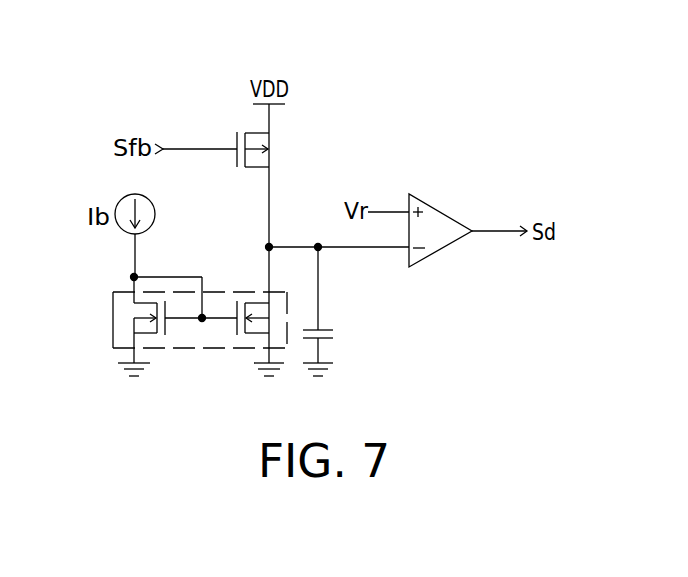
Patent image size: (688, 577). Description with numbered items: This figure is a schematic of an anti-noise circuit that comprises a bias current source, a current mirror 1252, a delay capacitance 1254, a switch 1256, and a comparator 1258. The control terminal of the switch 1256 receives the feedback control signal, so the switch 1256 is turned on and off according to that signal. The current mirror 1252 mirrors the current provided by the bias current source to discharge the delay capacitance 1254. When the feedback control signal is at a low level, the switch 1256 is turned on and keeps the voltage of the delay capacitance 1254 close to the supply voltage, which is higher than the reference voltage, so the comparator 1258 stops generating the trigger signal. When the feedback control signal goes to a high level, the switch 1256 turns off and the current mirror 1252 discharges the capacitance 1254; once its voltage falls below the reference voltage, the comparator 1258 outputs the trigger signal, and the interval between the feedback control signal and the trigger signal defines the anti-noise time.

The current mirror 1252 is at (116, 313).
The delay capacitance 1254 is at (333, 332).
The switch 1256 is at (270, 139).
The comparator 1258 is at (440, 212).